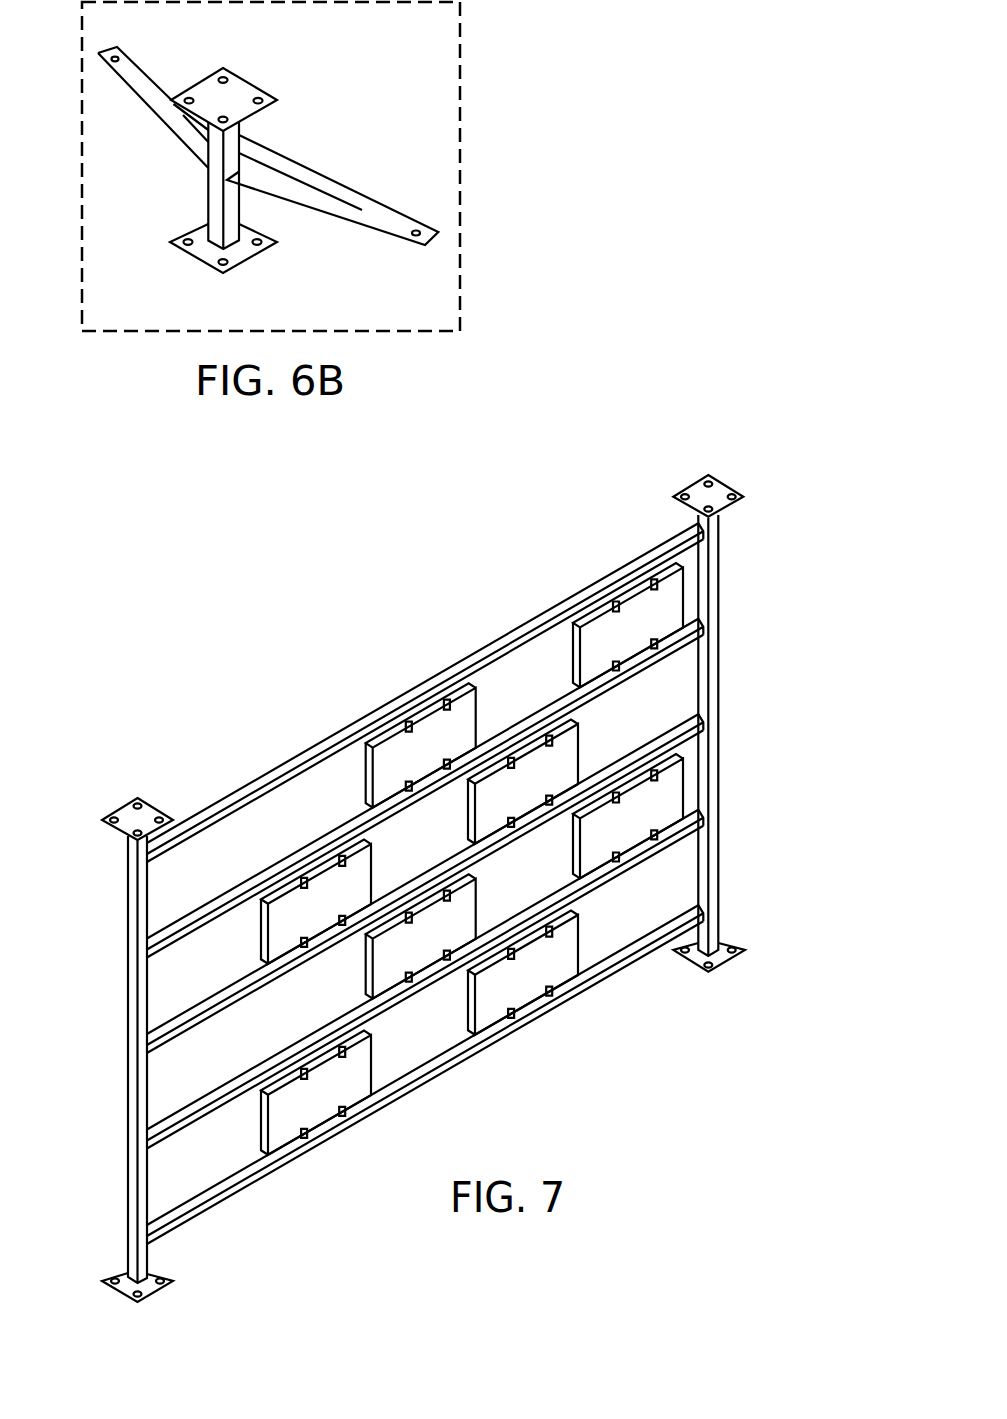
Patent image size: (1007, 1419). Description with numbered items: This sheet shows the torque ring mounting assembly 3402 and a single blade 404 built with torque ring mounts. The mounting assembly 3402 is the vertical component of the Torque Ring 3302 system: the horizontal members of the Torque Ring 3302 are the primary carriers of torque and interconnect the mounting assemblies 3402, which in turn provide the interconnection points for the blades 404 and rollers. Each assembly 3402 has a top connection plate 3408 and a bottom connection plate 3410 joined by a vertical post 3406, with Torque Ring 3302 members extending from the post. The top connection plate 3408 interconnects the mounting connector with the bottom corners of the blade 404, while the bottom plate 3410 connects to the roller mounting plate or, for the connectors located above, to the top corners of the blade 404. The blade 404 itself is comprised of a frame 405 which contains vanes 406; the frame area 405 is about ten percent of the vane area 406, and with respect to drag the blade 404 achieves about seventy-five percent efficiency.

In FIG. 6B, the Torque Ring 3302 is at (138, 80).
In FIG. 6B, the Torque Ring mounting assembly 3402 is at (318, 72).
In FIG. 6B, the post 3406 is at (207, 197).
In FIG. 6B, the top connection plate 3408 is at (240, 88).
In FIG. 6B, the bottom Torque Ring connection plate 3410 is at (197, 260).
In FIG. 7, the bottom Torque Ring connection plate 3410 is at (120, 808).
In FIG. 7, the blade 404 is at (334, 688).
In FIG. 7, the frame 405 is at (127, 1105).
In FIG. 7, the vane 406 is at (420, 740).